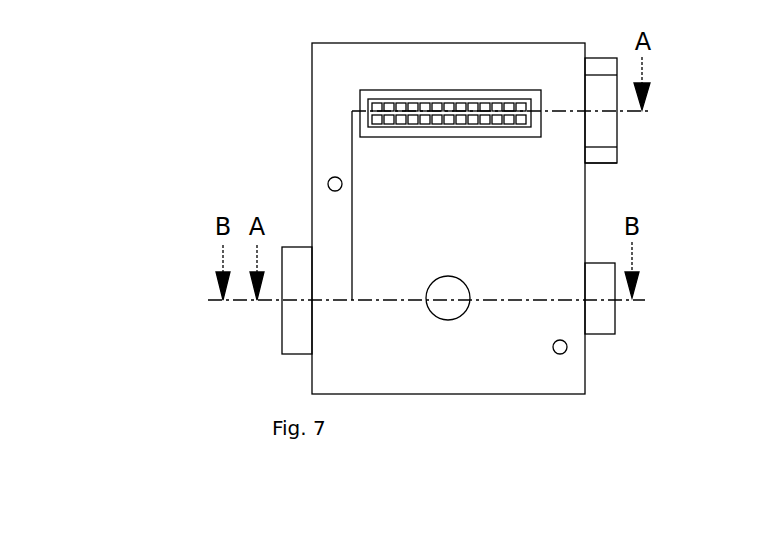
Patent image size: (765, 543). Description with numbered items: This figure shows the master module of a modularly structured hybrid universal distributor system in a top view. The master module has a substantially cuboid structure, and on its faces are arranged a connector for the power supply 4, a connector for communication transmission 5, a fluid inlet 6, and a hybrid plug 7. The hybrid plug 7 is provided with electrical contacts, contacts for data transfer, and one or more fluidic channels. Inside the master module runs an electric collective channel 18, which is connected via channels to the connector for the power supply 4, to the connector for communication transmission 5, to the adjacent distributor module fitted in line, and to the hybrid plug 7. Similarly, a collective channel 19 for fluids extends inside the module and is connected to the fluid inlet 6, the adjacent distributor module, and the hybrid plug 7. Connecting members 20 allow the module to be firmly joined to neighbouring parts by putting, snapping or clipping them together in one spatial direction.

The connector for the power supply 4 is at (608, 155).
The connector for communication transmission 5 is at (610, 136).
The fluid inlet 6 is at (600, 318).
The hybrid plug 7 is at (294, 333).
The electric collective channel 18 is at (363, 131).
The collective channel for fluids 19 is at (449, 313).
The connecting members 20 is at (335, 184).